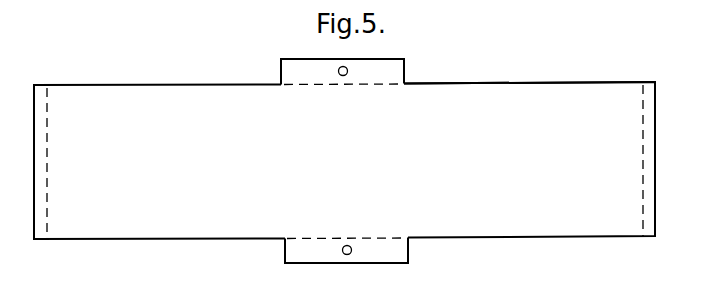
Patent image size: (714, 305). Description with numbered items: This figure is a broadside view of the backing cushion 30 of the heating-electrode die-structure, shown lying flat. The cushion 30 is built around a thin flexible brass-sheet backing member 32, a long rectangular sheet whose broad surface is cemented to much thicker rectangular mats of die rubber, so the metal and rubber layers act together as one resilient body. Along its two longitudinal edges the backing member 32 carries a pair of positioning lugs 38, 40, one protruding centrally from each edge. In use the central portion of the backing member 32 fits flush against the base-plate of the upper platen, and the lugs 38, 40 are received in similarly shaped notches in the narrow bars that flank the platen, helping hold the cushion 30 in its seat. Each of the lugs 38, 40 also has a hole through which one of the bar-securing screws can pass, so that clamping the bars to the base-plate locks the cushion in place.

The inner resilient cushion 30 is at (356, 151).
The backing member 32 is at (489, 92).
The positioning lug 38 is at (386, 62).
The positioning lug 40 is at (387, 256).